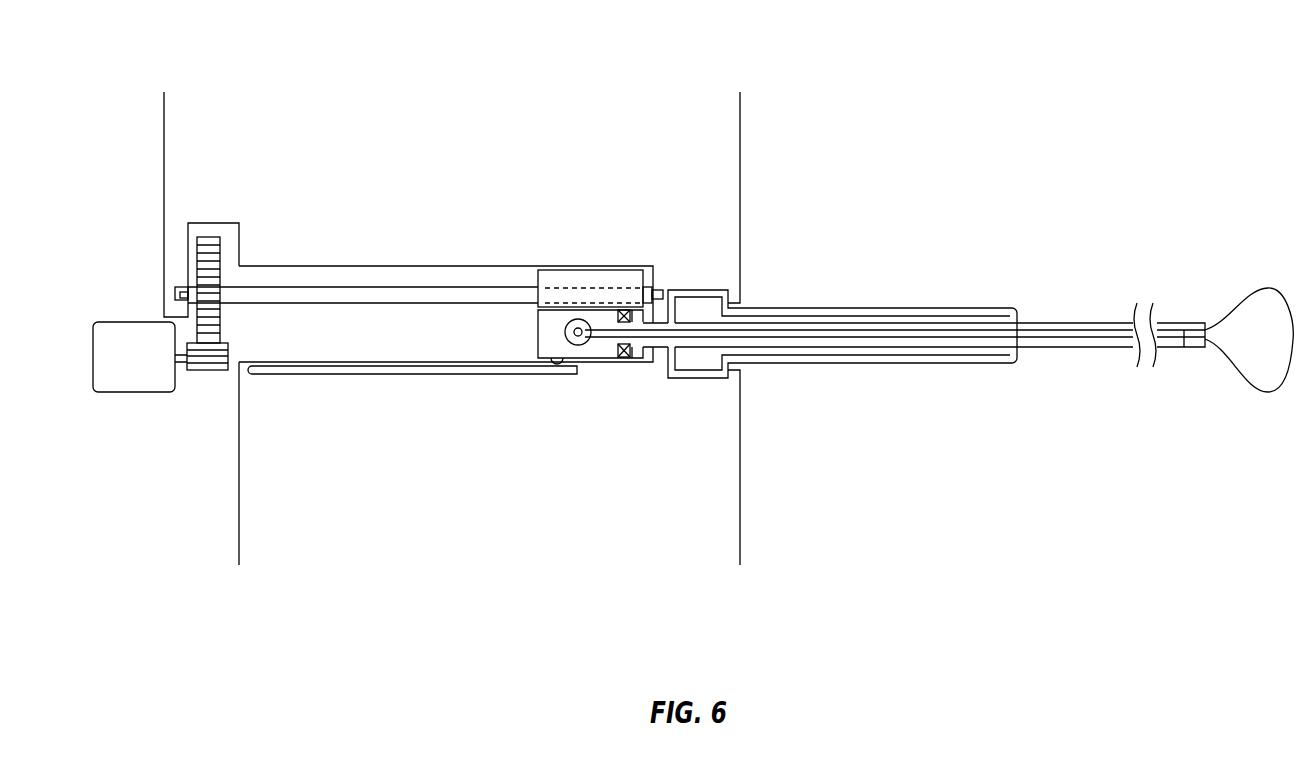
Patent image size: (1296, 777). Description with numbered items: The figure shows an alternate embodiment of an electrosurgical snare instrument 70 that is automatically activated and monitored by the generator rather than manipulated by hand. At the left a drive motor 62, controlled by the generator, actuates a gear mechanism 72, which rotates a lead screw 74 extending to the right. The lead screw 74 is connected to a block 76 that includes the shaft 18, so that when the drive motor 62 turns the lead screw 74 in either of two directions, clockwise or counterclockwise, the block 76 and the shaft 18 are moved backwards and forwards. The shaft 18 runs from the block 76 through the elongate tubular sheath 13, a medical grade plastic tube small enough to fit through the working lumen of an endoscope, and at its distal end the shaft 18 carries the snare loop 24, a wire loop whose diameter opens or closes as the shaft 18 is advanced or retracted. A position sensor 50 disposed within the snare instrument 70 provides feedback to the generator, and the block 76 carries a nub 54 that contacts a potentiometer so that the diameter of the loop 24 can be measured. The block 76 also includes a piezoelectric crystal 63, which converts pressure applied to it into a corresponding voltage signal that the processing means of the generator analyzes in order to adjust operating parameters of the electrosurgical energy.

The snare instrument 70 is at (477, 90).
The gear mechanism 72 is at (208, 237).
The lead screw 74 is at (417, 280).
The block 76 is at (590, 270).
The drive motor 62 is at (128, 322).
The position sensor 50 is at (388, 381).
The nub 54 is at (559, 364).
The piezoelectric crystal 63 is at (622, 358).
The shaft 18 is at (1078, 323).
The sheath 13 is at (1080, 364).
The snare loop 24 is at (1260, 282).